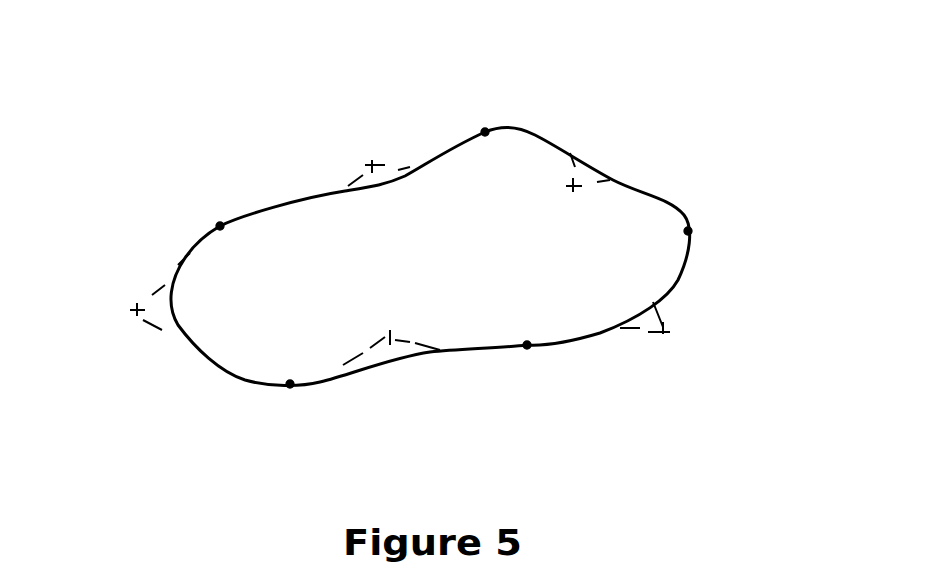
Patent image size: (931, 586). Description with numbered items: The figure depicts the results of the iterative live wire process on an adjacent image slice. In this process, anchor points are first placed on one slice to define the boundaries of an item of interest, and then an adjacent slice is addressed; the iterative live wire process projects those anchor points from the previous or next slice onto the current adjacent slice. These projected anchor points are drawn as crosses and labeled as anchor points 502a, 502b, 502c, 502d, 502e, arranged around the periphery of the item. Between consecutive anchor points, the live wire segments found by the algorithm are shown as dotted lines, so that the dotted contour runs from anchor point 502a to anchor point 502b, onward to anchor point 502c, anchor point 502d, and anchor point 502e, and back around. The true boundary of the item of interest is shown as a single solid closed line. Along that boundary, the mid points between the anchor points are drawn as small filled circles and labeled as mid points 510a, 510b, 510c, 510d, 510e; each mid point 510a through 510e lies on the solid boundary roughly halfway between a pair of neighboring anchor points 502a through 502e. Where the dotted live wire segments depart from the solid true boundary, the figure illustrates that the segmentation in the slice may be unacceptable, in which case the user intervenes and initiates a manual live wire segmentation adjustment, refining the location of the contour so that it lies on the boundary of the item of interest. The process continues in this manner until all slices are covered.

The mid point 510a is at (470, 119).
The mid point 510b is at (714, 230).
The mid point 510c is at (532, 370).
The mid point 510d is at (285, 405).
The mid point 510e is at (198, 213).
The anchor point 502a is at (346, 150).
The anchor point 502b is at (592, 174).
The anchor point 502c is at (690, 333).
The anchor point 502d is at (405, 348).
The anchor point 502e is at (105, 310).